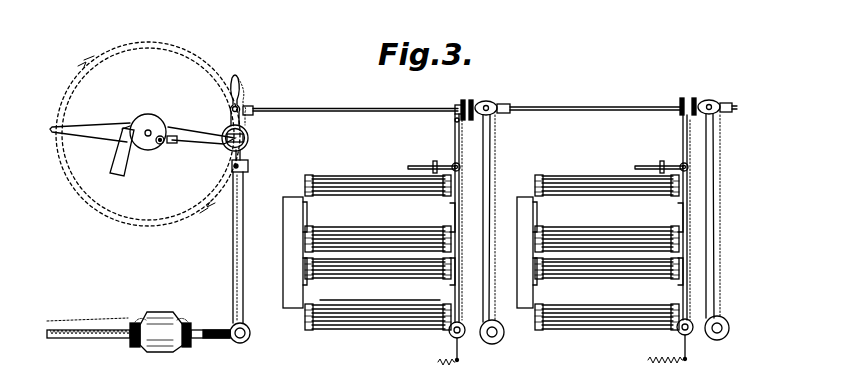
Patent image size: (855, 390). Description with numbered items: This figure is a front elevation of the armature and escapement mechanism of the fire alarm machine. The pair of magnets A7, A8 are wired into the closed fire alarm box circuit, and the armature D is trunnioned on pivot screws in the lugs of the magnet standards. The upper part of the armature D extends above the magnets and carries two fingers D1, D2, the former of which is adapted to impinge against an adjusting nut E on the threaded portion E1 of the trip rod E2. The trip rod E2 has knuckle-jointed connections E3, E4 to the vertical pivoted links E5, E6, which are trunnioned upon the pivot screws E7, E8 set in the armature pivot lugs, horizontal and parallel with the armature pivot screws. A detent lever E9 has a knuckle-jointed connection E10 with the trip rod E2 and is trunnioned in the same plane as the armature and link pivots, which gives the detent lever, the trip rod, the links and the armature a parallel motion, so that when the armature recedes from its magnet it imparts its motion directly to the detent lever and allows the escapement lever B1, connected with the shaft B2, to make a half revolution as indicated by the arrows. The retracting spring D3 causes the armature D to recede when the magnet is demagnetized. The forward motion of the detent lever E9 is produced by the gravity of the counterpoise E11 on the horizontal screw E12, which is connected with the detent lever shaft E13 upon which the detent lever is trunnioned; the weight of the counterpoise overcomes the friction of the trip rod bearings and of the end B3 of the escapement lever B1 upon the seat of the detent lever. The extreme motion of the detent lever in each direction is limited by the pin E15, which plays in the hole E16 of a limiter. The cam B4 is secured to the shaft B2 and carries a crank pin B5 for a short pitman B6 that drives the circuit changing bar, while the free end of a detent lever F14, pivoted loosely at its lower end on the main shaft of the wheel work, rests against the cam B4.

The escapement lever B1 is at (98, 128).
The shaft B2 is at (152, 131).
The end of escapement lever B3 is at (249, 137).
The cam B4 is at (146, 118).
The crank pin B5 is at (157, 145).
The short pitman B6 is at (172, 144).
The detent lever F14 is at (118, 158).
The knuckle jointed connection E10 is at (240, 108).
The trip rod E2 is at (320, 108).
The detent lever E9 is at (238, 255).
The detent lever shaft E13 is at (251, 334).
The screw E12 is at (77, 334).
The pin E15 is at (134, 347).
The counterpoise E11 is at (158, 352).
The hole E16 is at (187, 347).
The adjusting nut E is at (462, 104).
The threaded portion E1 is at (455, 108).
The pivot screw E7 is at (487, 104).
The knuckle-jointed connection E3 is at (500, 106).
The vertical pivoted link E5 is at (492, 160).
The finger D1 is at (453, 118).
The finger D2 is at (454, 126).
The armature D is at (459, 261).
The retracting spring D3 is at (438, 362).
The magnet A7 is at (378, 213).
The magnet A8 is at (378, 294).
The pivot screw E8 is at (709, 103).
The knuckle-jointed connection E4 is at (717, 105).
The vertical pivoted link E6 is at (714, 173).